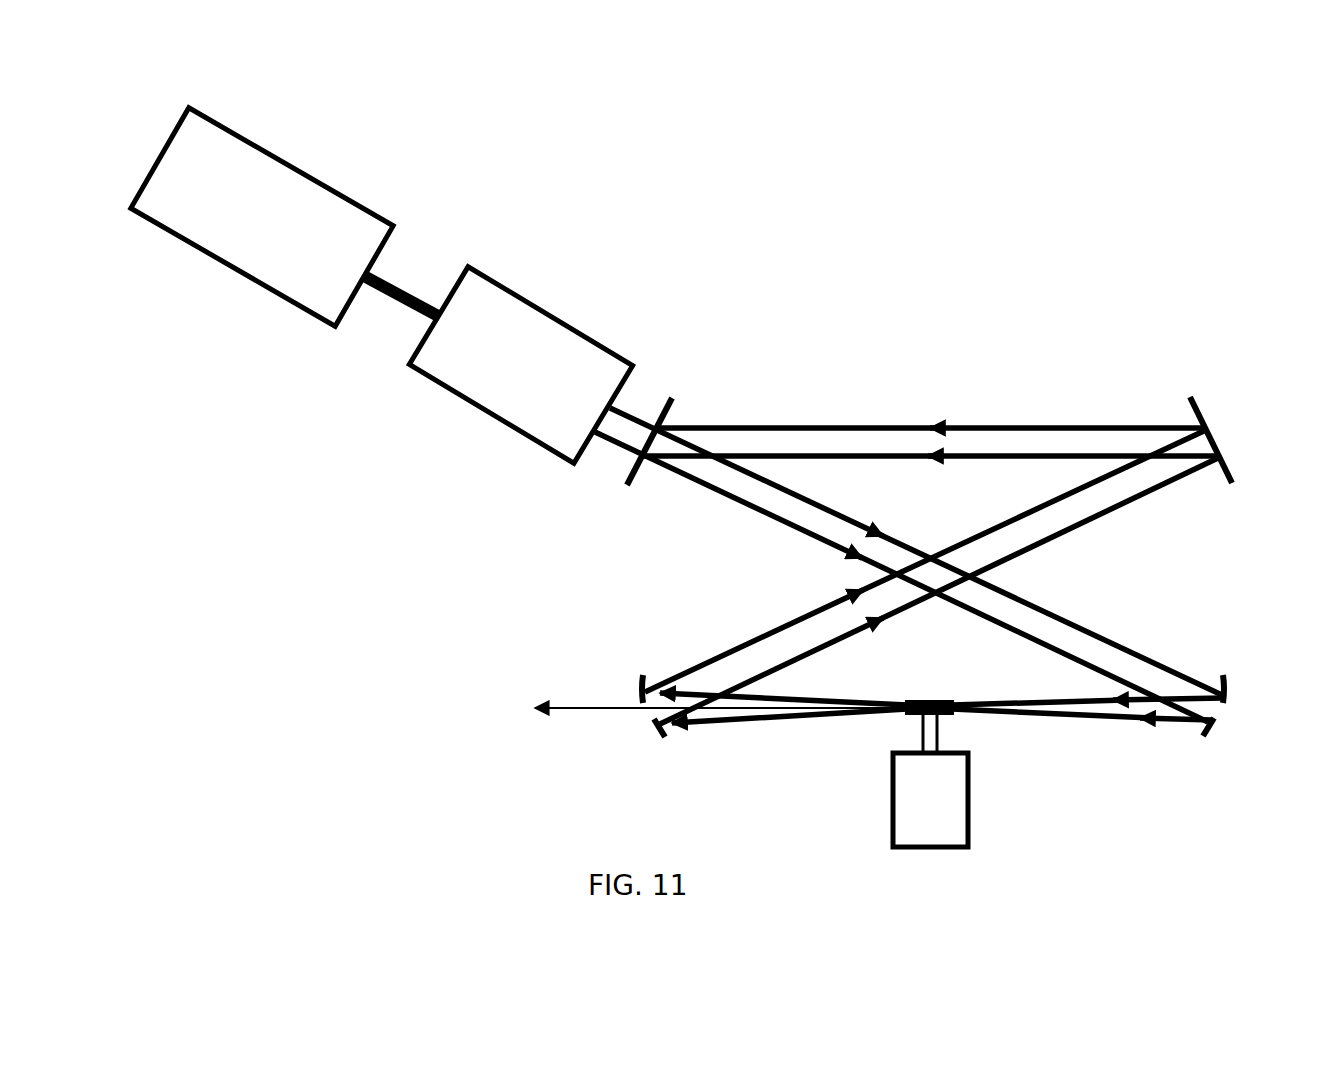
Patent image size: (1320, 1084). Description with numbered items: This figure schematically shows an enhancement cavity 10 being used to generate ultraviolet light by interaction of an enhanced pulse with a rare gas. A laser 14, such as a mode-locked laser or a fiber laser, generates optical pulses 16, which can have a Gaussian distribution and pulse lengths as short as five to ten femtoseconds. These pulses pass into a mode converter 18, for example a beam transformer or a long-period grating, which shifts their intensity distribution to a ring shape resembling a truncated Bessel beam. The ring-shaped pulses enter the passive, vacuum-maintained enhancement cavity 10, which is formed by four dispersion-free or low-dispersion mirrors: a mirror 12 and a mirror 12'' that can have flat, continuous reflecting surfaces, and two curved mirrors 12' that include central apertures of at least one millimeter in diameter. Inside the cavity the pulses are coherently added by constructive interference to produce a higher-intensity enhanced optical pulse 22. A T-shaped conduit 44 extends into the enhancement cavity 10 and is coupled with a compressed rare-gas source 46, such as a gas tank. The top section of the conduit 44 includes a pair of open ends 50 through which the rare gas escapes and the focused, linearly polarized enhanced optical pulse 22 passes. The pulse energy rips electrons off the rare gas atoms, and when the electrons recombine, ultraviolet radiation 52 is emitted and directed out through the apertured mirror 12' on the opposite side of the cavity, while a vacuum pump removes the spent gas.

The enhancement cavity 10 is at (1185, 294).
The mirror 12 is at (650, 472).
The curved apertured mirror 12' is at (932, 734).
The mirror 12'' is at (1242, 430).
The laser 14 is at (277, 232).
The optical pulses 16 is at (392, 302).
The mode converter 18 is at (535, 381).
The enhanced optical pulse 22 is at (757, 480).
The T-shaped conduit 44 is at (932, 718).
The compressed rare-gas source 46 is at (945, 814).
The open ends 50 is at (908, 700).
The ultraviolet radiation 52 is at (587, 710).